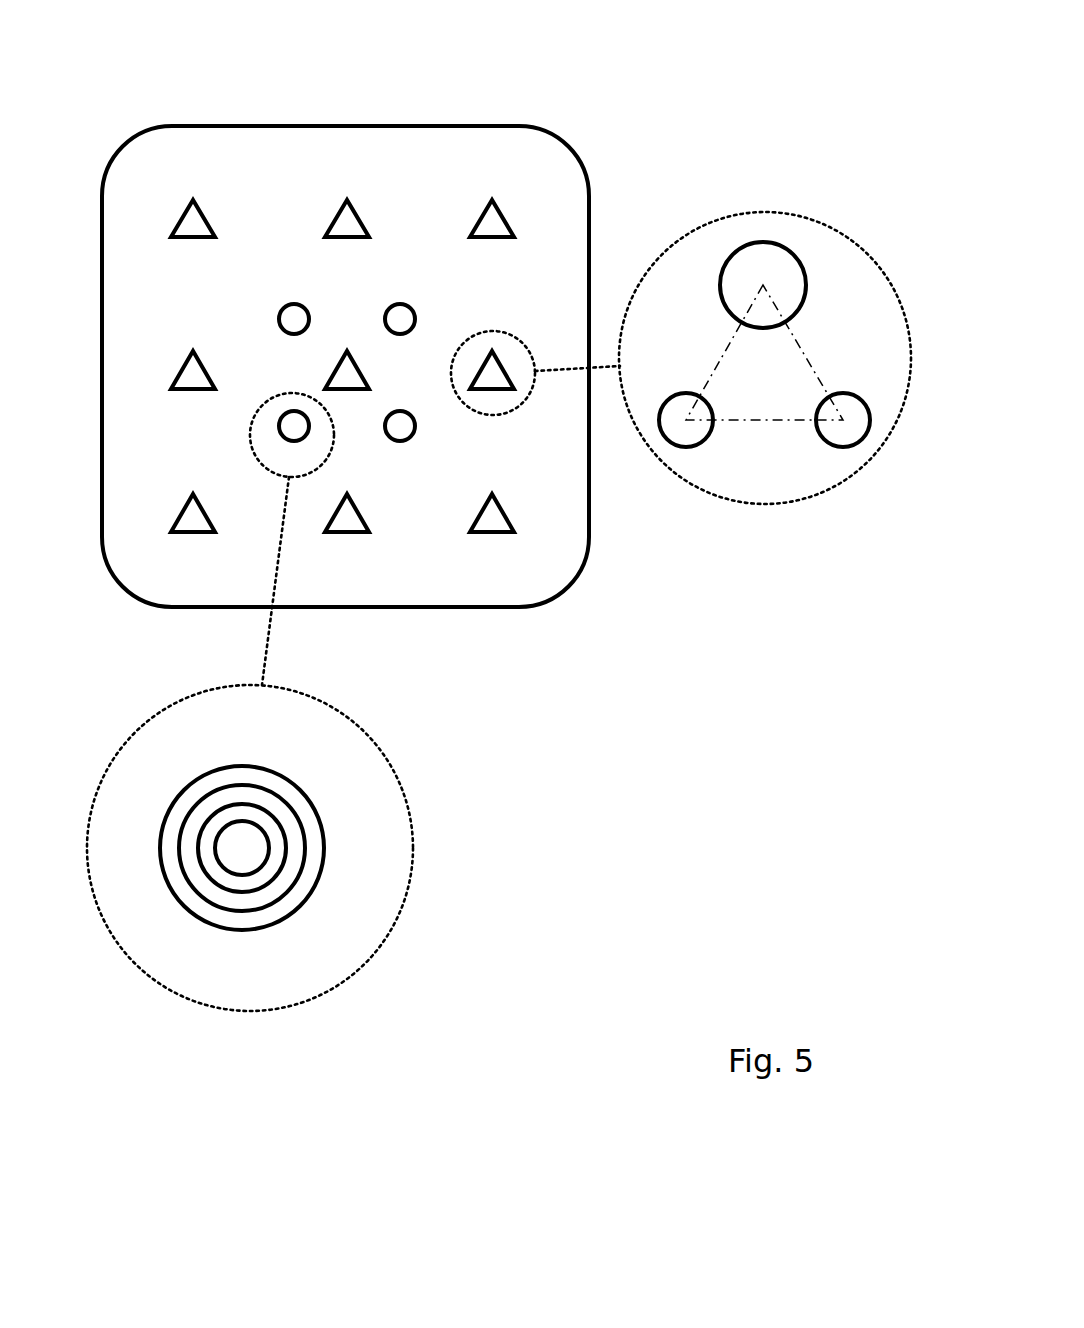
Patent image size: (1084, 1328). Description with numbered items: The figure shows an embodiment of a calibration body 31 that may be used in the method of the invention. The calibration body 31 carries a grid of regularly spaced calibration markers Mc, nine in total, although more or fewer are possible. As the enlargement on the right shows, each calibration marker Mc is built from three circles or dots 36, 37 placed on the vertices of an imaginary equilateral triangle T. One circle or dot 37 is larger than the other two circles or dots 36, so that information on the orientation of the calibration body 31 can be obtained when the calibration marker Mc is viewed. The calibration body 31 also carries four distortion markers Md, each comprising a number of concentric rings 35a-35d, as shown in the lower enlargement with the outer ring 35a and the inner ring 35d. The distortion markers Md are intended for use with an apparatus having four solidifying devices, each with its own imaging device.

The calibration body 31 is at (457, 690).
The calibration marker Mc is at (173, 220).
The distortion marker Md is at (292, 311).
The larger circle or dot 37 is at (727, 287).
The smaller circles or dots 36 is at (675, 425).
The imaginary equilateral triangle T is at (805, 353).
The concentric ring 35a is at (287, 922).
The concentric ring 35d is at (222, 863).